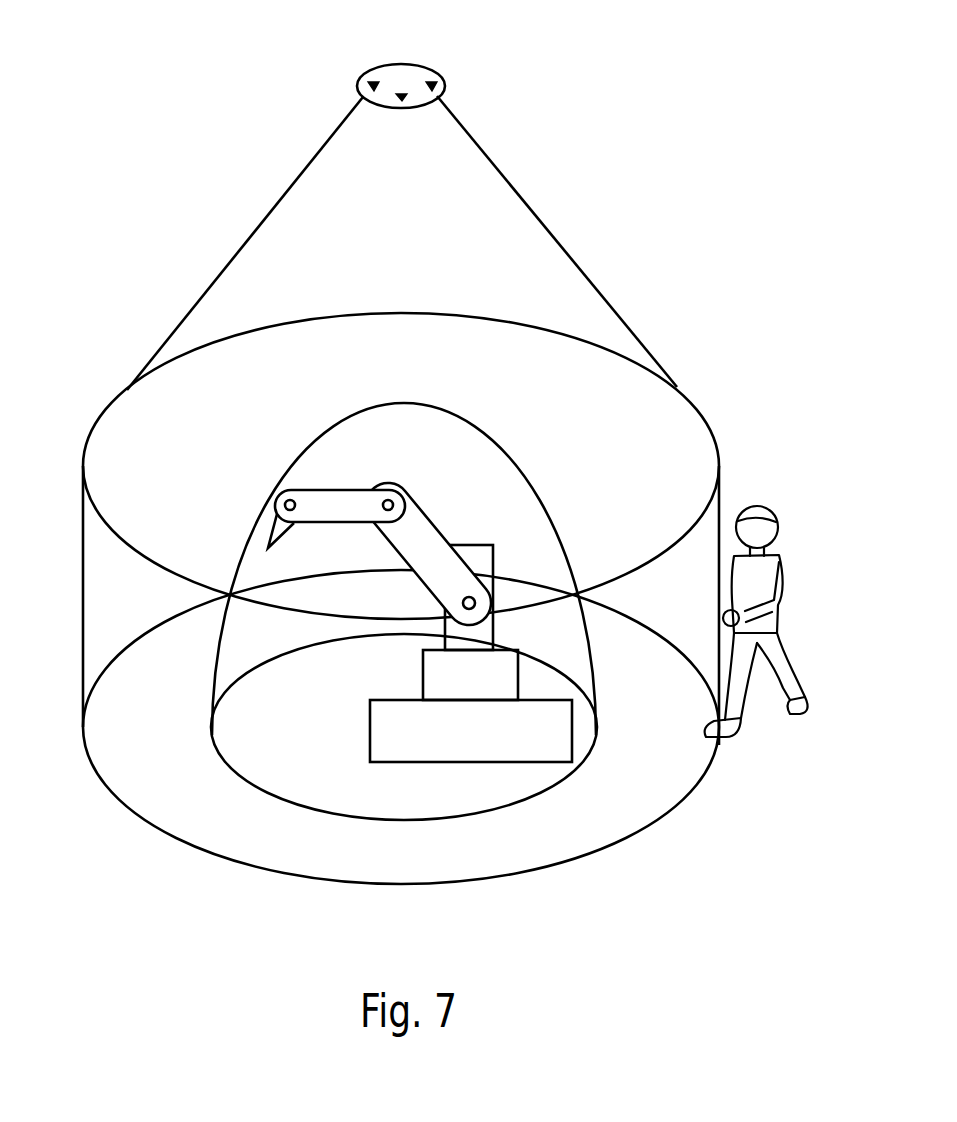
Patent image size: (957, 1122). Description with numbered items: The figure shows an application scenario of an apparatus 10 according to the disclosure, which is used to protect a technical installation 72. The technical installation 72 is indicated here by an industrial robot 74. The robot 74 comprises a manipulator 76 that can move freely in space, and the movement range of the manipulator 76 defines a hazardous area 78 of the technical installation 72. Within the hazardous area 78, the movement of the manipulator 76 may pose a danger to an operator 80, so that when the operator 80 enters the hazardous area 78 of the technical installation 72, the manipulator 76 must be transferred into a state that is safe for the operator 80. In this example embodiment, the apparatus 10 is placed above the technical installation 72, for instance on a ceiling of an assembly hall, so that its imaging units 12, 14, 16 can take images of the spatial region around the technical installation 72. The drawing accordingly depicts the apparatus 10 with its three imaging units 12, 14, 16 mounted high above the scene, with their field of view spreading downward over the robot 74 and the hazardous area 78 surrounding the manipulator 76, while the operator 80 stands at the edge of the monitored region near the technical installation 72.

The apparatus 10 is at (400, 73).
The imaging unit 12 is at (405, 101).
The imaging unit 14 is at (437, 80).
The imaging unit 16 is at (367, 80).
The technical installation 72 is at (345, 782).
The industrial robot 74 is at (476, 742).
The manipulator 76 is at (420, 537).
The hazardous area 78 is at (217, 653).
The operator 80 is at (763, 565).